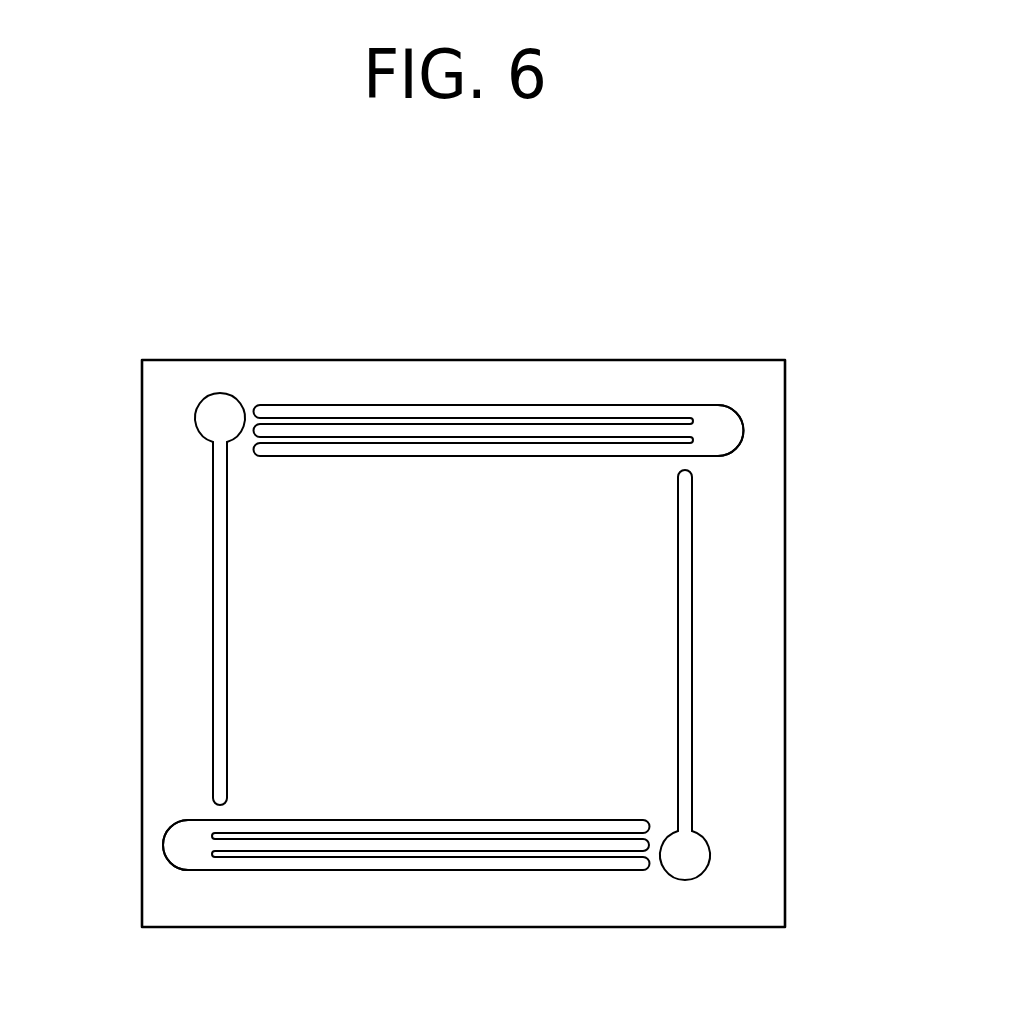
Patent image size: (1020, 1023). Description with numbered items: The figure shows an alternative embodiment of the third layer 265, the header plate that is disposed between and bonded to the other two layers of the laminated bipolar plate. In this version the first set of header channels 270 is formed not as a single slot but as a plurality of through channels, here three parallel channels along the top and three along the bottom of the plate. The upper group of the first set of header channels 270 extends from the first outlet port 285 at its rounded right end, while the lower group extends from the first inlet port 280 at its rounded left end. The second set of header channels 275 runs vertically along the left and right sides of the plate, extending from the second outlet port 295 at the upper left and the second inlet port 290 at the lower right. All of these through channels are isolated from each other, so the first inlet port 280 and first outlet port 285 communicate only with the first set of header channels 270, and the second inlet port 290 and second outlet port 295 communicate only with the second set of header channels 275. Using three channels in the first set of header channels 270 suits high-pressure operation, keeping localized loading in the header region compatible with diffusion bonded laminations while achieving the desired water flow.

The third layer 265 is at (105, 220).
The first set of header channels 270 is at (524, 396).
The second set of header channels 275 is at (200, 665).
The first inlet port 280 is at (183, 862).
The first outlet port 285 is at (733, 438).
The second inlet port 290 is at (683, 860).
The second outlet port 295 is at (220, 410).